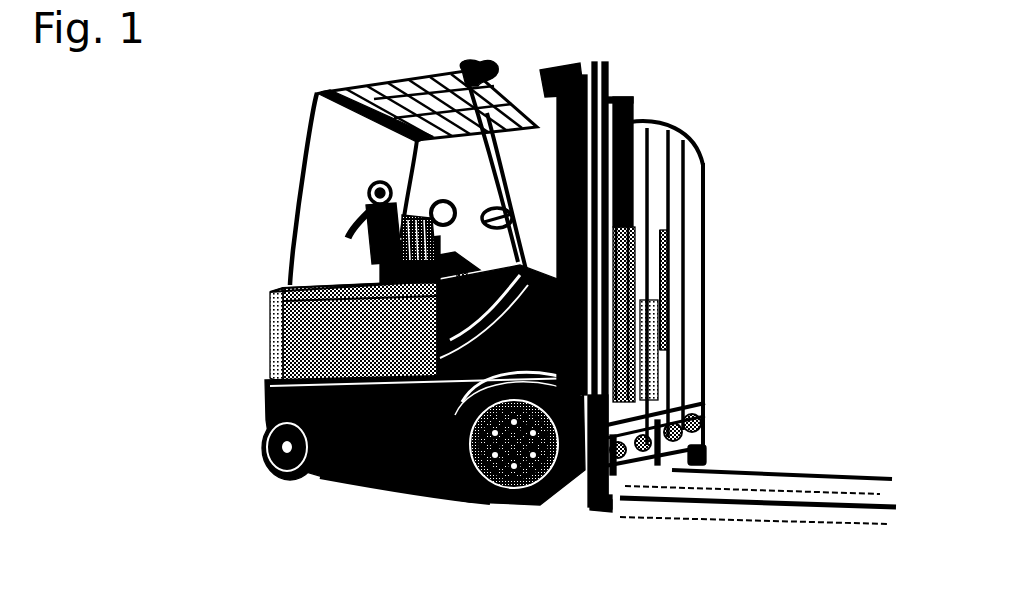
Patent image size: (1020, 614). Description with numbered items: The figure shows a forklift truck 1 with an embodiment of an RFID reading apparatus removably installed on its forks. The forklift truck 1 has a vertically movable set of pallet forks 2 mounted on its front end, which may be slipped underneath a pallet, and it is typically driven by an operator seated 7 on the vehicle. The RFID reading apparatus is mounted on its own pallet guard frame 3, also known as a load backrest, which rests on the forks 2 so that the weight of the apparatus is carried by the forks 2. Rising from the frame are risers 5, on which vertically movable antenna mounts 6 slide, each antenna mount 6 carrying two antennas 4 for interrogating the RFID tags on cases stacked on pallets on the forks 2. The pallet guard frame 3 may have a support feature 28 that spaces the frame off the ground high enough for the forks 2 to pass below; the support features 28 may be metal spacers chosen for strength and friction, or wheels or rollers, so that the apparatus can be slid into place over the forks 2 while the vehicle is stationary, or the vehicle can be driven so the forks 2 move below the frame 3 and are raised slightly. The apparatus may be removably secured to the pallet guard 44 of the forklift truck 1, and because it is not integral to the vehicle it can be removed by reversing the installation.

The forklift truck 1 is at (281, 286).
The pallet forks 2 is at (858, 464).
The pallet guard frame 3 is at (704, 307).
The antennas 4 is at (692, 406).
The risers 5 is at (677, 183).
The antenna mounts 6 is at (583, 505).
The operator seated 7 is at (367, 208).
The support feature 28 is at (705, 455).
The pallet guard 44 is at (673, 250).